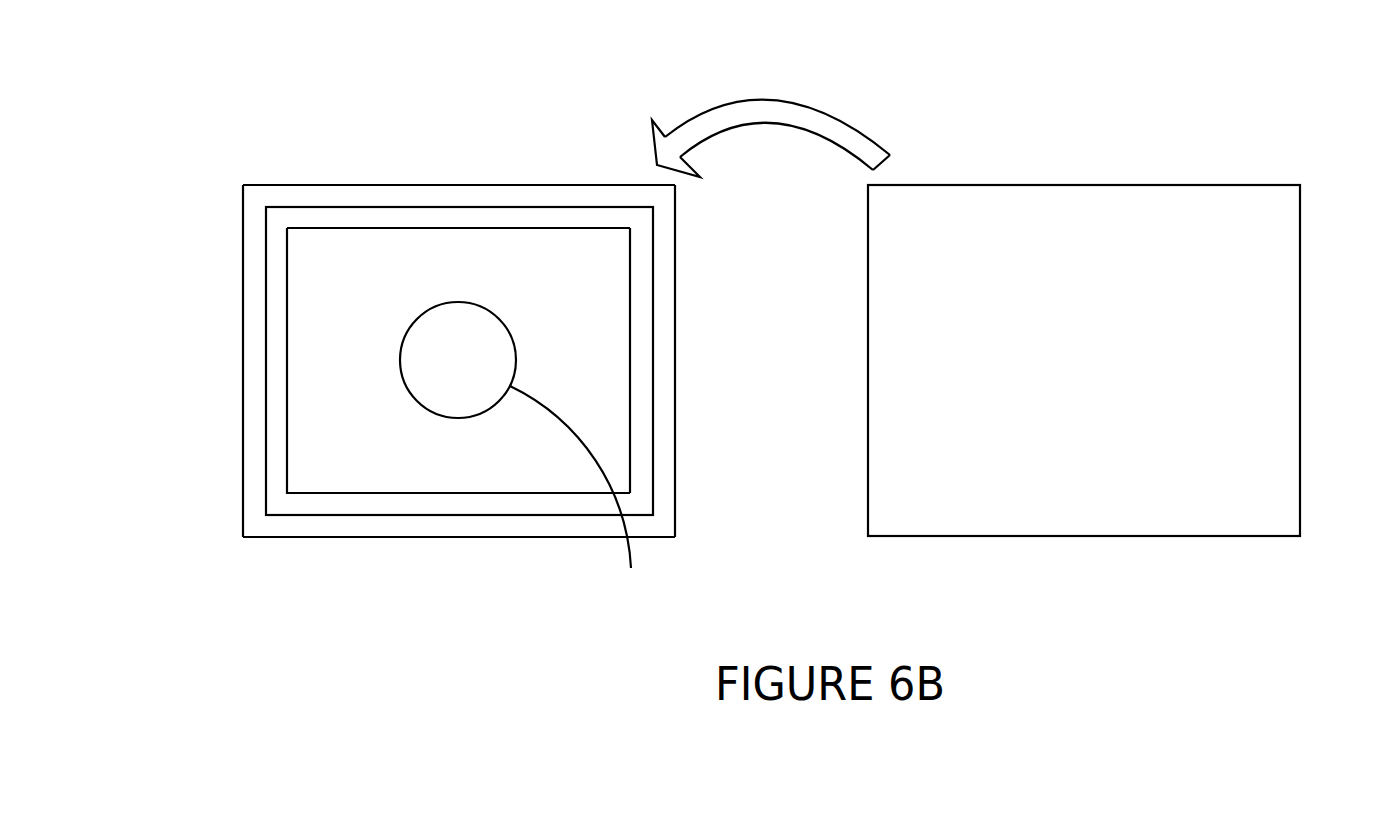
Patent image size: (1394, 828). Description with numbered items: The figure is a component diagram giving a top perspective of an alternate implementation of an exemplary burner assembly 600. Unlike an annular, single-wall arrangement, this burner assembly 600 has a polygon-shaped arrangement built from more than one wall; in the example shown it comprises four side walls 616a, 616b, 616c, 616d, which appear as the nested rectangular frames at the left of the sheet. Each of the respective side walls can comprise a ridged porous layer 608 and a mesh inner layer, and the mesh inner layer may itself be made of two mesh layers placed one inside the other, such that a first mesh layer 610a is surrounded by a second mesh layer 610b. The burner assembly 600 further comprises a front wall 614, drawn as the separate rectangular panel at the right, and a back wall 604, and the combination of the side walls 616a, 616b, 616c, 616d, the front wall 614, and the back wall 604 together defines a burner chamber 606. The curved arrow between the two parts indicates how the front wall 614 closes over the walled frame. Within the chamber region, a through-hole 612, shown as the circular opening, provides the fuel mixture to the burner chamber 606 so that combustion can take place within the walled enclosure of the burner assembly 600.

The burner assembly 600 is at (1073, 127).
The back wall 604 is at (445, 345).
The burner chamber 606 is at (547, 233).
The ridged porous layer 608 is at (464, 352).
The first mesh layer 610a is at (293, 495).
The second mesh layer 610b is at (358, 515).
The through-hole 612 is at (524, 448).
The front wall 614 is at (1300, 240).
The side wall 616a is at (678, 371).
The side wall 616b is at (470, 184).
The side wall 616c is at (243, 368).
The side wall 616d is at (440, 540).